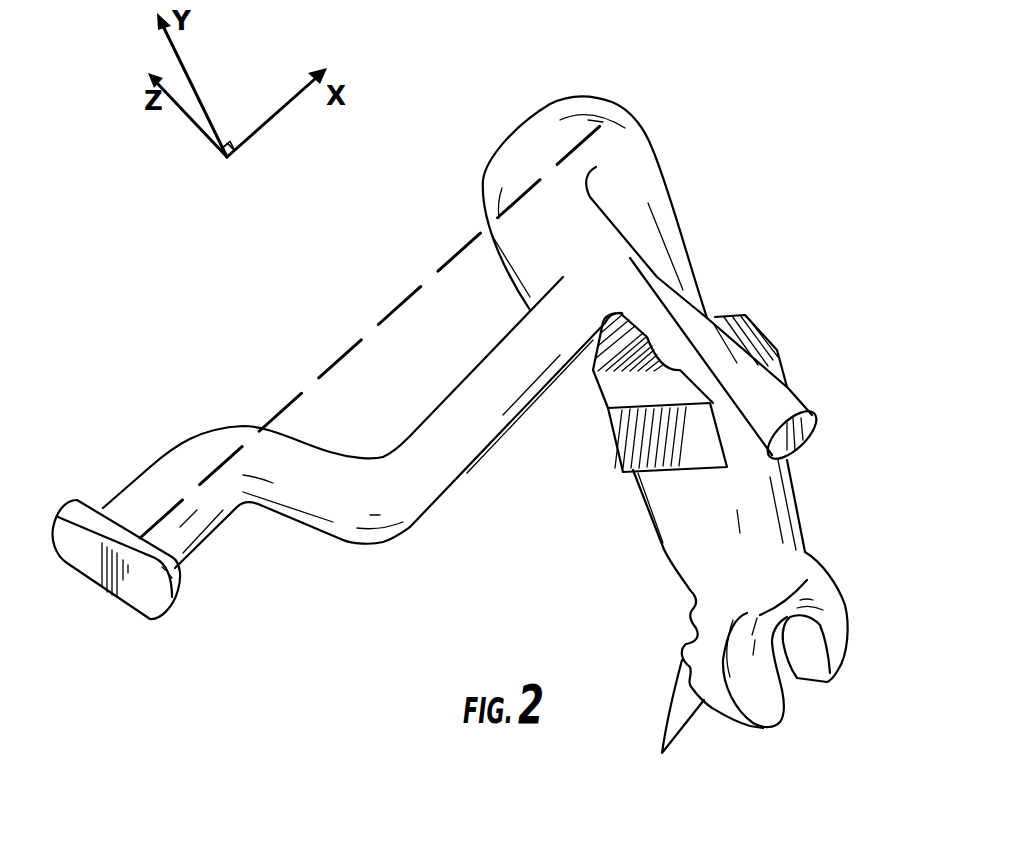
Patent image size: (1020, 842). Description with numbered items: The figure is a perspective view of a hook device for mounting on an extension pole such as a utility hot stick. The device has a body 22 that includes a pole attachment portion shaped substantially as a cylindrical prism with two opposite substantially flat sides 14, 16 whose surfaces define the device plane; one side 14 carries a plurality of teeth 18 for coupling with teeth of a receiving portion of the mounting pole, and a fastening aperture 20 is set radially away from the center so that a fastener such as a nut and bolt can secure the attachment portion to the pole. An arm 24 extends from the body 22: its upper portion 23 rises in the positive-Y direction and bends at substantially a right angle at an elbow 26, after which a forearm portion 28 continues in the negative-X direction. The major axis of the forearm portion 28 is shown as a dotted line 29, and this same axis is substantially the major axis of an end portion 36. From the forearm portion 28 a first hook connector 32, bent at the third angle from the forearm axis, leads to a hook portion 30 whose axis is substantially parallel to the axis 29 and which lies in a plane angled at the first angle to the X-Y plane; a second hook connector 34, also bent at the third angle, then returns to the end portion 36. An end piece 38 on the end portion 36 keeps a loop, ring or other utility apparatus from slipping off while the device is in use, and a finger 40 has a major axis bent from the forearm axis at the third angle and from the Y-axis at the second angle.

The flat side 14 is at (860, 672).
The flat side 16 is at (837, 612).
The teeth 18 is at (663, 752).
The fastening aperture 20 is at (795, 686).
The body 22 is at (800, 493).
The upper portion 23 is at (688, 248).
The arm 24 is at (460, 110).
The elbow 26 is at (603, 117).
The forearm portion 28 is at (505, 176).
The major axis of the forearm portion 29 is at (367, 330).
The hook portion 30 is at (450, 490).
The first hook connector 32 is at (560, 227).
The second hook connector 34 is at (350, 515).
The end portion 36 is at (197, 460).
The end piece 38 is at (80, 573).
The finger 40 is at (765, 407).